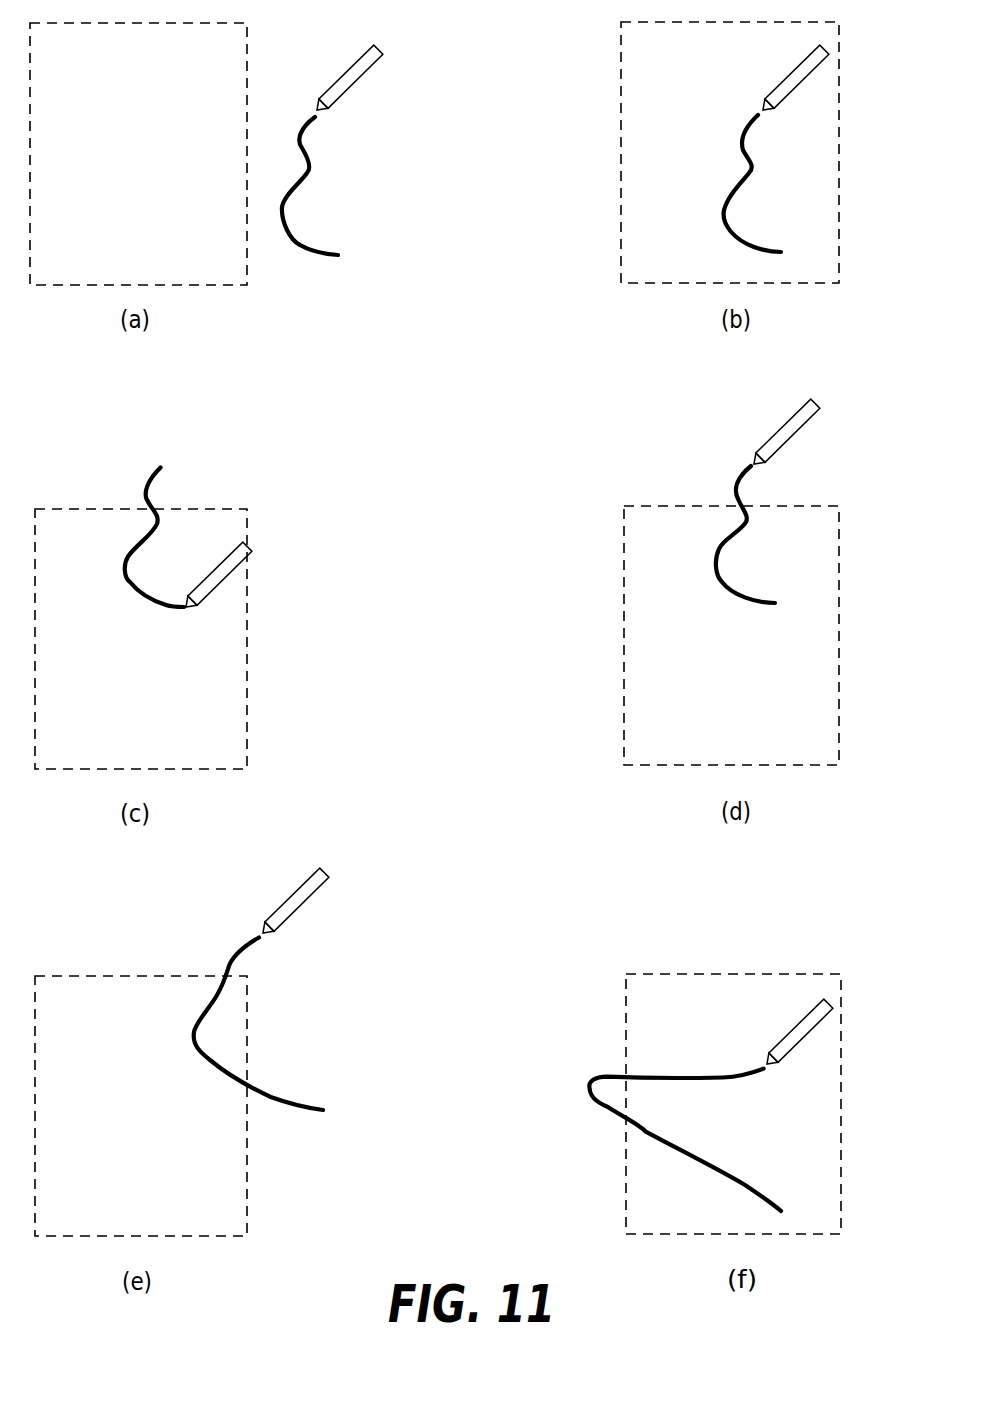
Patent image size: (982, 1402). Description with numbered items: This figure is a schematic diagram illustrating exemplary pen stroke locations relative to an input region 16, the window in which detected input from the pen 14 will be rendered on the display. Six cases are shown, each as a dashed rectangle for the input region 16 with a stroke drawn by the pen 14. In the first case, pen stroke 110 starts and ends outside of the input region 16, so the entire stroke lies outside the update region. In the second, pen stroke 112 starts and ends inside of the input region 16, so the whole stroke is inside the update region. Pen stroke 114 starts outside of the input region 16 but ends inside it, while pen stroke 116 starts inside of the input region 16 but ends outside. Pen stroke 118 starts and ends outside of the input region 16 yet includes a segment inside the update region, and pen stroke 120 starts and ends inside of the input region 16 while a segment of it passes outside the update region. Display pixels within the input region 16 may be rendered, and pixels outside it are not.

The pen 14 is at (383, 60).
The input region 16 is at (79, 268).
The pen stroke 110 is at (308, 173).
The pen stroke 112 is at (754, 173).
The pen stroke 114 is at (130, 550).
The pen stroke 116 is at (746, 526).
The pen stroke 118 is at (191, 1042).
The pen stroke 120 is at (601, 1078).